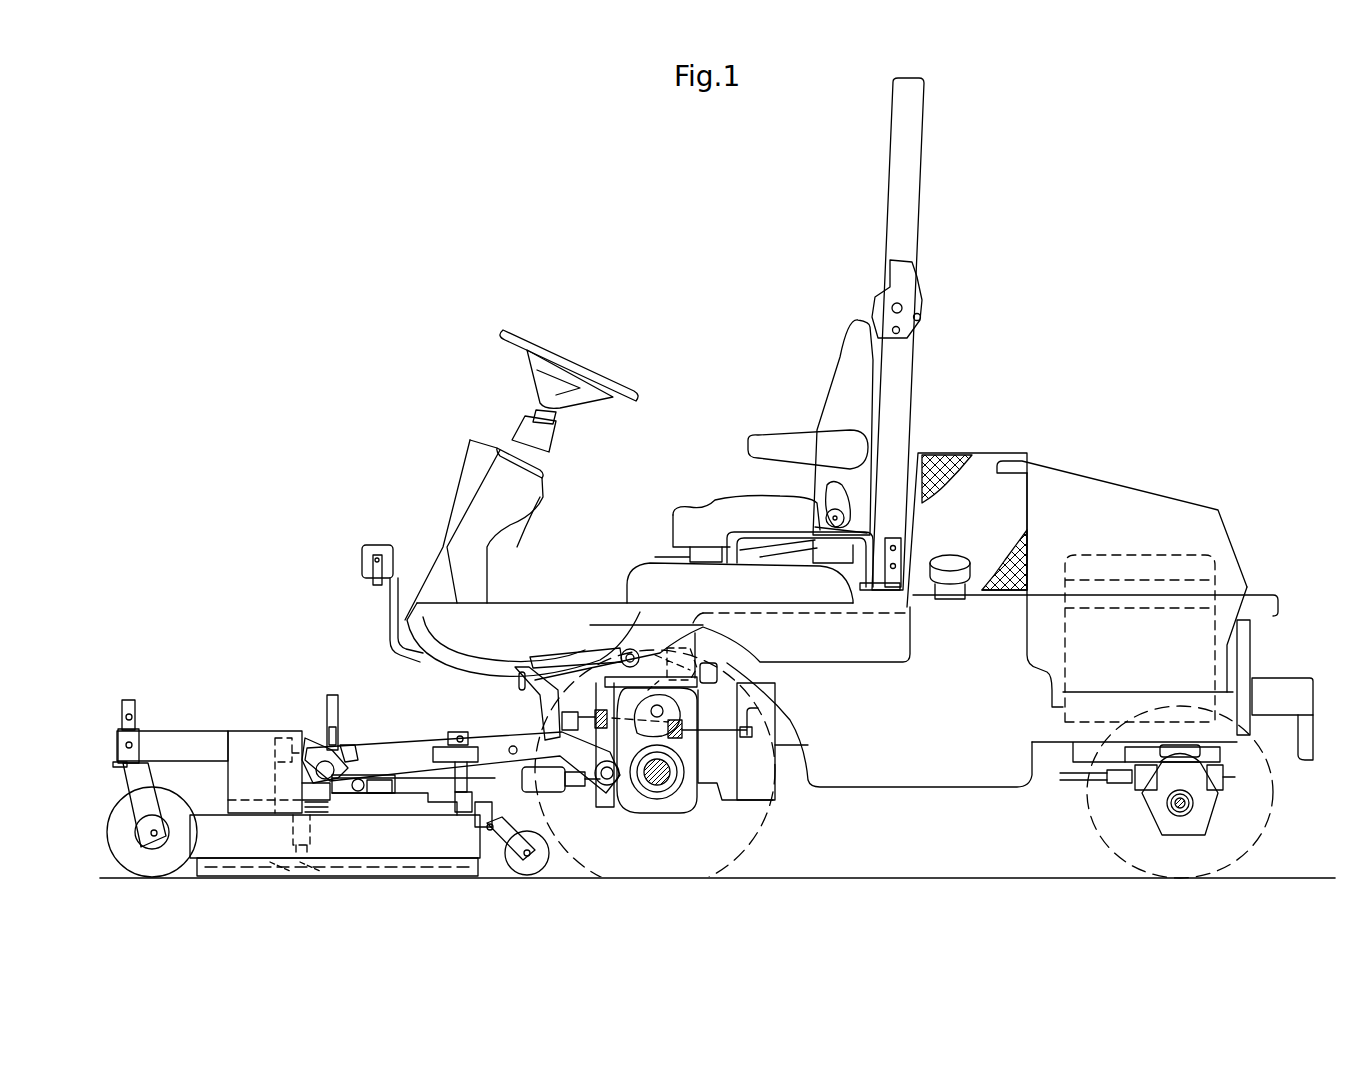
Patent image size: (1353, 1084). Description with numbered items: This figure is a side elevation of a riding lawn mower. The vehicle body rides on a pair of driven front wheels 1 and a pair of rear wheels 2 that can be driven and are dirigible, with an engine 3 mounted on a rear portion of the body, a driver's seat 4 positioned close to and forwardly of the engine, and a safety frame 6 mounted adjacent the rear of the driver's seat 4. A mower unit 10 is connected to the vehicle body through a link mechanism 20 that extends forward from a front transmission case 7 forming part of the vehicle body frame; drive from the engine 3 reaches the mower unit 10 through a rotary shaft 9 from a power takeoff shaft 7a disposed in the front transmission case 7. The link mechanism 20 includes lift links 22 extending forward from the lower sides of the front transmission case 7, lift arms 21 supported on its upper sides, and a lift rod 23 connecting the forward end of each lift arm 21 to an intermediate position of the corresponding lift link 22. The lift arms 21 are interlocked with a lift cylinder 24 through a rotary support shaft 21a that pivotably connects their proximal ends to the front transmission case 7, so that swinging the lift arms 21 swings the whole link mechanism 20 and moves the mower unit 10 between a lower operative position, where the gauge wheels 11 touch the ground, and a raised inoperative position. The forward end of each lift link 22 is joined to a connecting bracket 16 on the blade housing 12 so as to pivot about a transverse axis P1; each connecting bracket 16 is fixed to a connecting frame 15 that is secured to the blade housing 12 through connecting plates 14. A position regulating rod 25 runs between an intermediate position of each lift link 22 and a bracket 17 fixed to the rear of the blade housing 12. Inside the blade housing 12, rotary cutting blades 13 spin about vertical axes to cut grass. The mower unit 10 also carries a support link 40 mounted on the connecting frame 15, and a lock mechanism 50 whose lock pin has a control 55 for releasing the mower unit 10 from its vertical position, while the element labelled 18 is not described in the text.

The front wheels 1 is at (770, 823).
The rear wheels 2 is at (1273, 823).
The engine 3 is at (1108, 553).
The driver's seat 4 is at (825, 417).
The safety frame 6 is at (923, 125).
The front transmission case 7 is at (658, 813).
The power takeoff shaft 7a is at (562, 797).
The rotary shaft 9 is at (407, 790).
The mower unit 10 is at (185, 716).
The gauge wheels 11 is at (105, 850).
The blade housing 12 is at (367, 840).
The rotary cutting blades 13 is at (280, 873).
The connecting plates 14 is at (230, 787).
The connecting frame 15 is at (273, 753).
The connecting bracket 16 is at (323, 770).
The bracket 17 is at (447, 810).
The rear gauge wheel 18 is at (537, 867).
The link mechanism 20 is at (387, 714).
The lift arms 21 is at (587, 652).
The rotary support shaft 21a is at (617, 650).
The lift links 22 is at (423, 753).
The lift rod 23 is at (513, 713).
The lift cylinder 24 is at (657, 640).
The position regulating rod 25 is at (493, 780).
The support link 40 is at (313, 719).
The lock mechanism 50 is at (310, 743).
The control 55 is at (333, 753).
The axis P1 is at (277, 800).